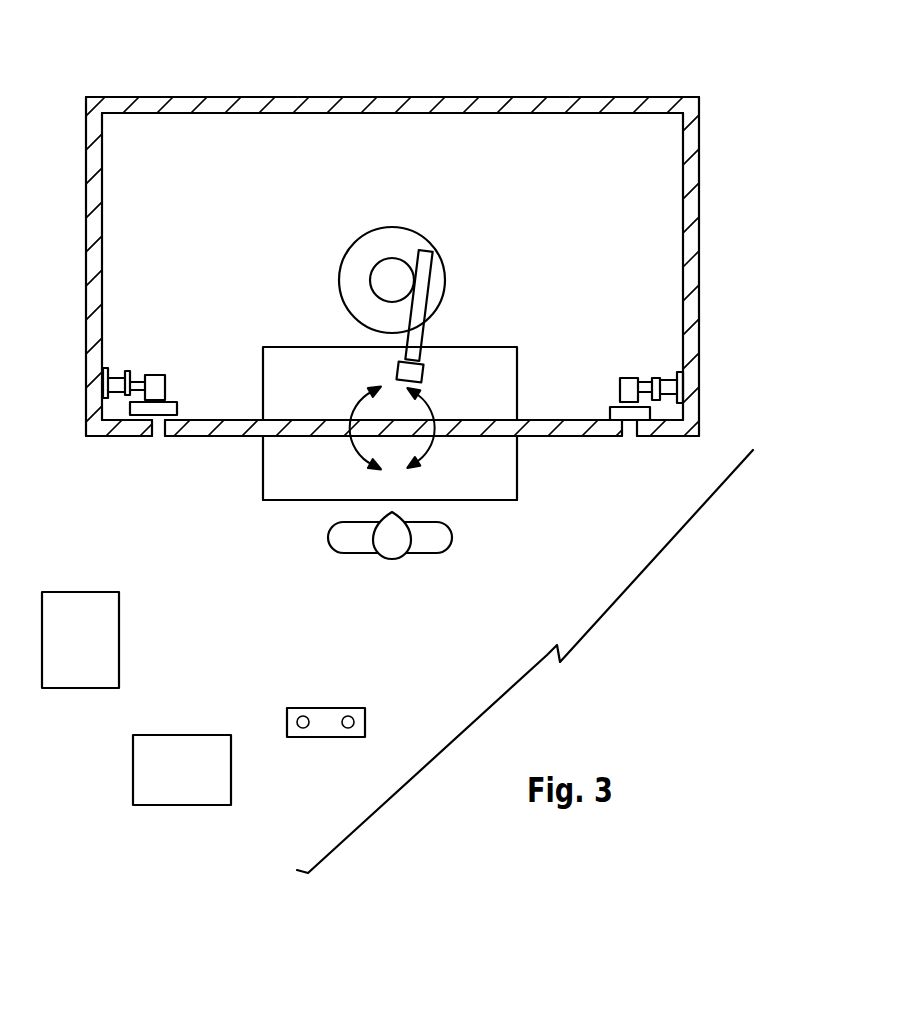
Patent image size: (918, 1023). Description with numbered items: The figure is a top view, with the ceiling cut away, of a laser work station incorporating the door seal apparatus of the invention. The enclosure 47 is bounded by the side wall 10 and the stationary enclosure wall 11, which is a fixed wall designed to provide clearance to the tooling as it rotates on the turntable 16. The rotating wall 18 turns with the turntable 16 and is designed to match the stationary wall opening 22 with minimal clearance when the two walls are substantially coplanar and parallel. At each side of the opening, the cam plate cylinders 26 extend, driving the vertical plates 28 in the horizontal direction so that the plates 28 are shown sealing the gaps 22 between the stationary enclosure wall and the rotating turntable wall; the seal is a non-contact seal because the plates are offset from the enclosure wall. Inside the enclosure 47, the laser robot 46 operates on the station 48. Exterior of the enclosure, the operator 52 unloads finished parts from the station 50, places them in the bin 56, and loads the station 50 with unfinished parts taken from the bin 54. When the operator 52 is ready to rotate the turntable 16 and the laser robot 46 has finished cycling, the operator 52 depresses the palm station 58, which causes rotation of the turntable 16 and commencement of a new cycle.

The side wall 10 is at (693, 253).
The stationary enclosure wall 11 is at (651, 430).
The turntable 16 is at (497, 490).
The rotating wall 18 is at (540, 428).
The stationary wall opening 22 is at (158, 437).
The cam plate cylinders 26 is at (120, 380).
The vertical plates 28 is at (165, 407).
The laser robot 46 is at (403, 237).
The enclosure 47 is at (523, 90).
The station 48 is at (468, 362).
The station 50 is at (468, 490).
The operator 52 is at (393, 548).
The bin 54 is at (110, 645).
The bin 56 is at (222, 787).
The palm station 58 is at (335, 728).